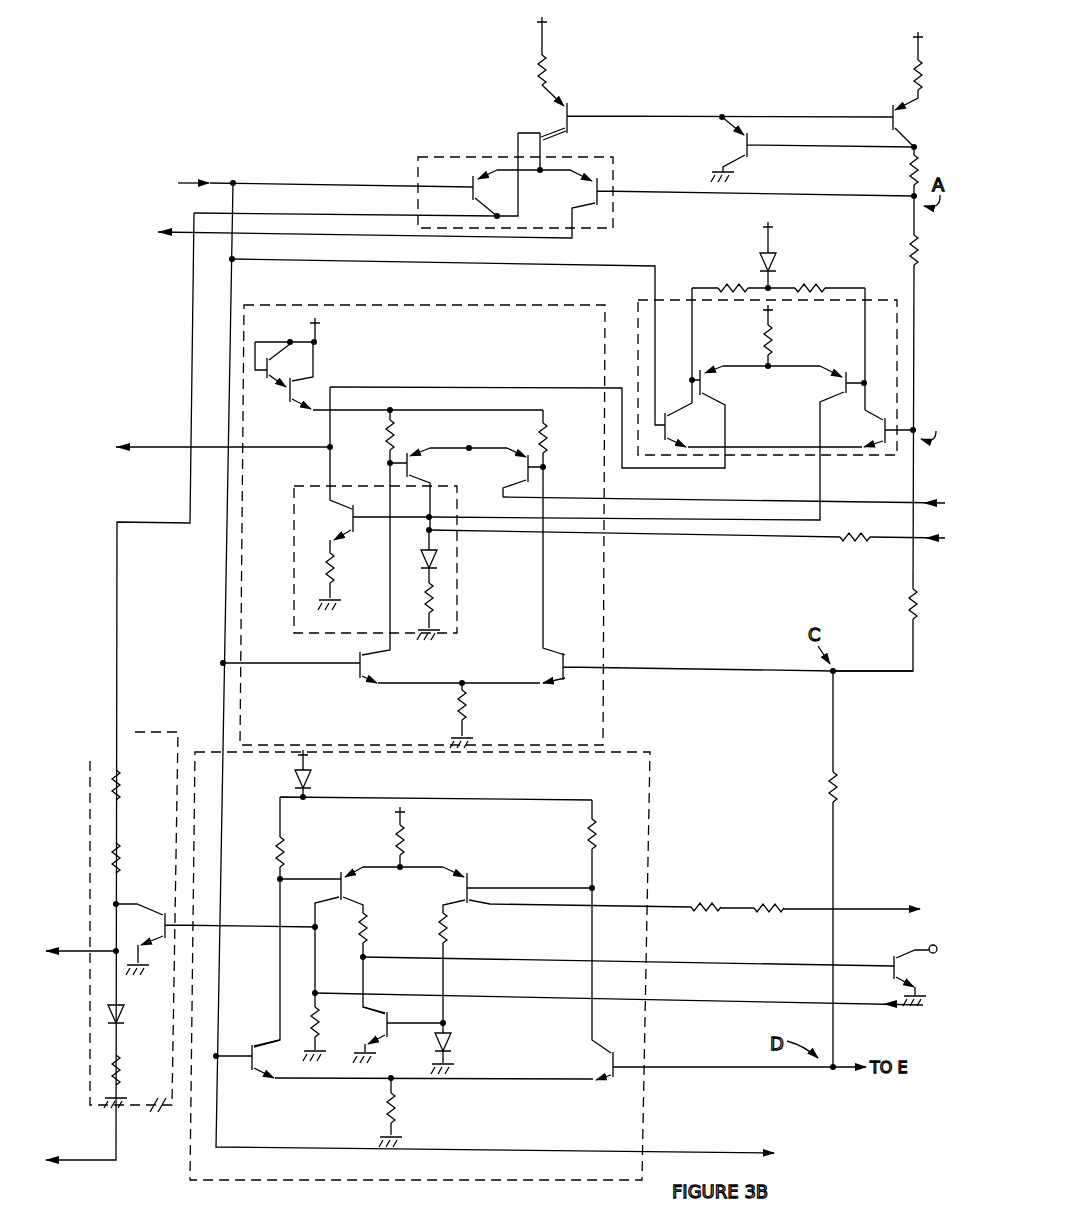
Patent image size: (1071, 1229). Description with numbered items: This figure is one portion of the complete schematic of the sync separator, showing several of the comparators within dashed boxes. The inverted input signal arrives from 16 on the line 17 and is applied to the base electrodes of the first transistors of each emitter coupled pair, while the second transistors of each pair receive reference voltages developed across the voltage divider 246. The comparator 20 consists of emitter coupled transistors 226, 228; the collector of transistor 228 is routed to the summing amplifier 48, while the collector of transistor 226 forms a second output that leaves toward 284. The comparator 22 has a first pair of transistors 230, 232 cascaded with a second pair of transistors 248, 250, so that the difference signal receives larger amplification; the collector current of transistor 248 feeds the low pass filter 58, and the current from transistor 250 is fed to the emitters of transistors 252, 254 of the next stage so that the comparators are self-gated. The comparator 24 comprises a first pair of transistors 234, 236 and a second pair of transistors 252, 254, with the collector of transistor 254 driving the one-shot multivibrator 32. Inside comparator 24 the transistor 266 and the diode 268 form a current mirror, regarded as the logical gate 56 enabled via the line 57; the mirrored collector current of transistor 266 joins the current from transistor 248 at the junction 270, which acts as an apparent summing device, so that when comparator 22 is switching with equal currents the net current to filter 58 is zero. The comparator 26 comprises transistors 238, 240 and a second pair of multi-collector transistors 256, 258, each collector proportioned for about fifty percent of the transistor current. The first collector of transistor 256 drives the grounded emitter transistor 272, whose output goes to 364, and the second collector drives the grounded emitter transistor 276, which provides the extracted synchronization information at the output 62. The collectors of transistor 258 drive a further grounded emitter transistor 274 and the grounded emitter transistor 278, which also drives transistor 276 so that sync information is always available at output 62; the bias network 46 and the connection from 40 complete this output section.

The line 17 is at (207, 181).
The input from 16 is at (300, 171).
The summing amplifier 48 is at (347, 224).
The output to 284 is at (258, 701).
The comparator 20 is at (571, 158).
The transistor 226 is at (475, 208).
The transistor 228 is at (573, 197).
The comparator 22 is at (796, 462).
The transistor 248 is at (717, 374).
The transistor 250 is at (836, 362).
The transistor 230 is at (711, 408).
The transistor 232 is at (873, 425).
The one-shot multivibrator 32 is at (726, 483).
The line 57 is at (891, 549).
The comparator 24 is at (604, 604).
The junction 270 is at (326, 446).
The low pass filter 58 is at (193, 448).
The transistor 252 is at (438, 440).
The transistor 254 is at (522, 447).
The logical gate 56 is at (456, 633).
The transistor 266 is at (340, 530).
The diode 268 is at (415, 573).
The transistor 234 is at (376, 690).
The transistor 236 is at (552, 685).
The voltage divider 246 is at (855, 720).
The comparator 26 is at (651, 823).
The transistor 256 is at (338, 873).
The transistor 258 is at (457, 872).
The grounded emitter transistor 278 is at (372, 1027).
The transistor 238 is at (260, 1040).
The transistor 240 is at (587, 1052).
The grounded emitter transistor 274 is at (820, 889).
The grounded emitter transistor 276 is at (904, 956).
The output 62 is at (946, 951).
The input from 40 is at (940, 1037).
The bias circuit 46 is at (136, 731).
The grounded emitter transistor 272 is at (127, 898).
The output circuit 364 is at (76, 931).